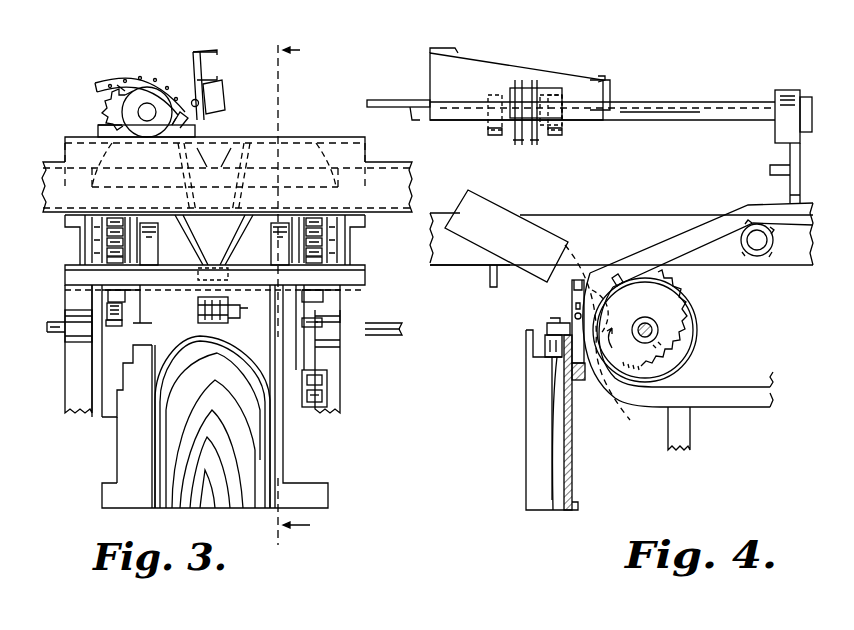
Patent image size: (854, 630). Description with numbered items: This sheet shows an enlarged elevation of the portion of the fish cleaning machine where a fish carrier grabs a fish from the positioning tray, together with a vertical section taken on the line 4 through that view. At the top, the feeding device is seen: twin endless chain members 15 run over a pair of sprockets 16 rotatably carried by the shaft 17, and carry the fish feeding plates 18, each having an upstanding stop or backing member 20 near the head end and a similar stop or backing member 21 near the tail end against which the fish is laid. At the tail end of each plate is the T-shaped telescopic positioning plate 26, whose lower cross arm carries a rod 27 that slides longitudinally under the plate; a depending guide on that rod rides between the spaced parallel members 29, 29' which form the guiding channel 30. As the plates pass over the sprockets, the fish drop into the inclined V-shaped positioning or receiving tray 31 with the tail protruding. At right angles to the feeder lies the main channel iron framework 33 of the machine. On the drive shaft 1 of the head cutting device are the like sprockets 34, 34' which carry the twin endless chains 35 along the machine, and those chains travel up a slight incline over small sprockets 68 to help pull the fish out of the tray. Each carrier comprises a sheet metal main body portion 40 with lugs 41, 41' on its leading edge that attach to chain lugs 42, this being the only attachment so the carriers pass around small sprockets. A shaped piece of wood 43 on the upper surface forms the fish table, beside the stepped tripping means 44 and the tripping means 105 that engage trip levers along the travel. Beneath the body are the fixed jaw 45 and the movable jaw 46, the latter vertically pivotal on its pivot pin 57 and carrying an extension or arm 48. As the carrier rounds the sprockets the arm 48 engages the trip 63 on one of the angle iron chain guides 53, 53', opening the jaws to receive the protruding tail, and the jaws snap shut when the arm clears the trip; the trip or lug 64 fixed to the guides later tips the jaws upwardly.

In FIG. 3, the drive shaft 1 is at (392, 355).
In FIG. 4, the drive shaft 1 is at (660, 331).
In FIG. 3, the section line 4— 4 is at (294, 286).
In FIG. 3, the endless chain member 15 is at (104, 78).
In FIG. 3, the sprocket 16 is at (125, 88).
In FIG. 3, the shaft 17 is at (138, 112).
In FIG. 4, the shaft 17 is at (665, 110).
In FIG. 3, the fish feeding plate 18 is at (193, 70).
In FIG. 4, the fish feeding plate 18 is at (490, 78).
In FIG. 3, the stop or backing member 20 is at (205, 52).
In FIG. 4, the stop or backing member 20 is at (446, 48).
In FIG. 3, the stop or backing member 21 is at (221, 80).
In FIG. 4, the stop or backing member 21 is at (602, 80).
In FIG. 4, the telescopic positioning plate 26 is at (555, 94).
In FIG. 3, the rod 27 is at (198, 125).
In FIG. 4, the rod 27 is at (400, 100).
In FIG. 4, the spaced parallel member 29 is at (502, 134).
In FIG. 4, the spaced parallel member 29' is at (560, 142).
In FIG. 4, the guiding channel 30 is at (528, 145).
In FIG. 3, the positioning or receiving tray 31 is at (243, 235).
In FIG. 4, the positioning or receiving tray 31 is at (510, 290).
In FIG. 3, the channel iron framework 33 is at (85, 264).
In FIG. 3, the sprocket 34 is at (354, 389).
In FIG. 4, the sprocket 34 is at (681, 326).
In FIG. 3, the sprocket 34' is at (148, 319).
In FIG. 3, the endless chain 35 is at (105, 294).
In FIG. 3, the main body portion 40 is at (290, 448).
In FIG. 4, the main body portion 40 is at (573, 456).
In FIG. 3, the lug 41 is at (302, 327).
In FIG. 3, the lug 41' is at (69, 335).
In FIG. 4, the lug 41' is at (536, 316).
In FIG. 3, the lug 42 is at (120, 360).
In FIG. 3, the piece of wood 43 is at (250, 495).
In FIG. 4, the piece of wood 43 is at (556, 405).
In FIG. 3, the stepped tripping means 44 is at (136, 426).
In FIG. 4, the stepped tripping means 44 is at (526, 406).
In FIG. 3, the fixed jaw 45 is at (210, 305).
In FIG. 3, the movable jaw 46 is at (240, 306).
In FIG. 4, the extension or arm 48 is at (582, 380).
In FIG. 3, the angle iron chain guide 53 is at (281, 228).
In FIG. 4, the angle iron chain guide 53 is at (687, 361).
In FIG. 3, the angle iron chain guide 53' is at (166, 244).
In FIG. 4, the angle iron chain guide 53' is at (701, 234).
In FIG. 4, the pivot pin 57 is at (573, 316).
In FIG. 4, the trip 63 is at (611, 343).
In FIG. 4, the trip or lug 64 is at (614, 285).
In FIG. 3, the small sprocket 68 is at (96, 231).
In FIG. 4, the small sprocket 68 is at (768, 255).
In FIG. 3, the tripping means 105 is at (98, 420).
In FIG. 4, the tripping means 105 is at (545, 344).